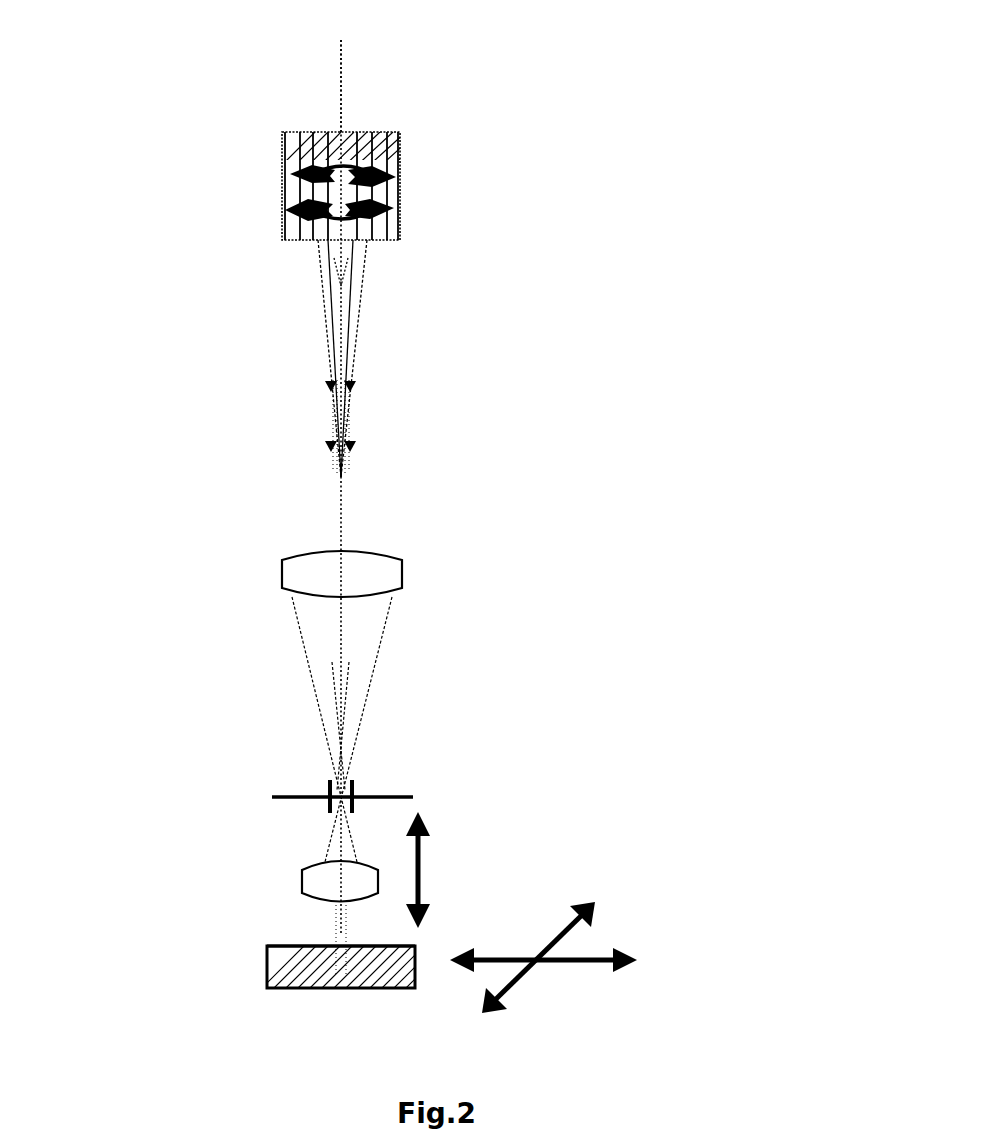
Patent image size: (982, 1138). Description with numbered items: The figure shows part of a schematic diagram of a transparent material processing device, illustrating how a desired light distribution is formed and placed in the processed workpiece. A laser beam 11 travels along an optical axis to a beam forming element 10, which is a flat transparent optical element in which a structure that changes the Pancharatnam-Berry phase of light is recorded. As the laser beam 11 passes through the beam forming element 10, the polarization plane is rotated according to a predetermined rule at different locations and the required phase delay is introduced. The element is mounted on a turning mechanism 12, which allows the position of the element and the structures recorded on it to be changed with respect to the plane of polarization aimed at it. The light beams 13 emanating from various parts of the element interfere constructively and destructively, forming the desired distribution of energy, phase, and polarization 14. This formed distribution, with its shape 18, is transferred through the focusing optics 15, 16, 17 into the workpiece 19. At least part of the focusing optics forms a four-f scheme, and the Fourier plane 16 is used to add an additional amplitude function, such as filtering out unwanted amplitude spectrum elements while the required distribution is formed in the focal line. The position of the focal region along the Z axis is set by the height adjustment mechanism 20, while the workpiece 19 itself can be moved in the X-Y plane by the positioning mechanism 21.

The beam forming element 10 is at (335, 147).
The laser beam 11 is at (330, 97).
The turning mechanism 12 is at (337, 218).
The light beams 13 is at (320, 302).
The distribution of energy, phase, and polarization 14 is at (337, 428).
The focusing optics 15 is at (290, 588).
The Fourier plane 16 is at (313, 780).
The focusing optics 17 is at (330, 863).
The shape of formed distribution 18 is at (337, 947).
The workpiece 19 is at (273, 970).
The height adjustment mechanism 20 is at (440, 860).
The positioning mechanism 21 is at (635, 913).